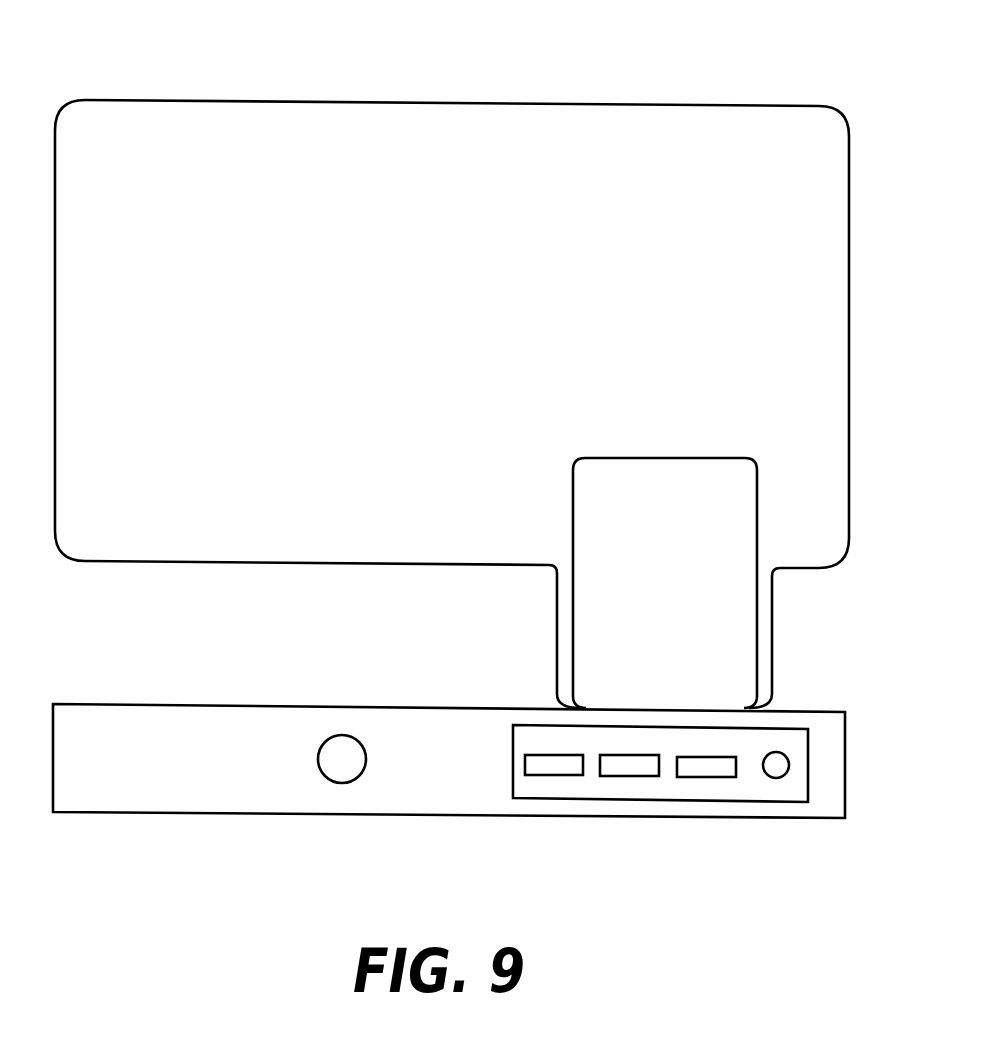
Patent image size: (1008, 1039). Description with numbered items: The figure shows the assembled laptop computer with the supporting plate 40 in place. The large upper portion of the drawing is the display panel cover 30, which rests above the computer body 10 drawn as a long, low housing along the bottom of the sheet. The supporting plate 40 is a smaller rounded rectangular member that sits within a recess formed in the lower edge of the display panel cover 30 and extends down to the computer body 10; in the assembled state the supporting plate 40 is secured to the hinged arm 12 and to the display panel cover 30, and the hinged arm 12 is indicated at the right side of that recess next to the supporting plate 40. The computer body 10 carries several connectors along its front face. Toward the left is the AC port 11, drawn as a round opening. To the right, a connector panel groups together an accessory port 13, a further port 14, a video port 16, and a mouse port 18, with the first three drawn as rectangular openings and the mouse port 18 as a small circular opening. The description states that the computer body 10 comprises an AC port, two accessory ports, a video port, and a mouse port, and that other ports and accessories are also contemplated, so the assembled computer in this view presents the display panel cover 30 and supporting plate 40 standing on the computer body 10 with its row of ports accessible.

The computer body 10 is at (173, 807).
The AC port 11 is at (340, 767).
The hinged arm 12 is at (774, 669).
The accessory port 13 is at (548, 763).
The connector slot 14 is at (633, 762).
The video port 16 is at (710, 762).
The mouse port 18 is at (778, 768).
The display panel cover 30 is at (433, 101).
The supporting plate 40 is at (638, 459).